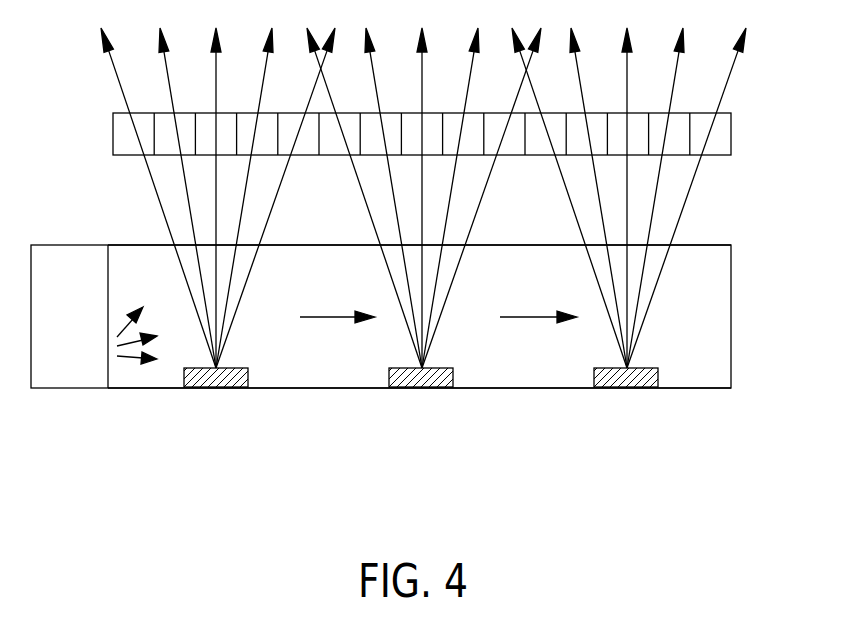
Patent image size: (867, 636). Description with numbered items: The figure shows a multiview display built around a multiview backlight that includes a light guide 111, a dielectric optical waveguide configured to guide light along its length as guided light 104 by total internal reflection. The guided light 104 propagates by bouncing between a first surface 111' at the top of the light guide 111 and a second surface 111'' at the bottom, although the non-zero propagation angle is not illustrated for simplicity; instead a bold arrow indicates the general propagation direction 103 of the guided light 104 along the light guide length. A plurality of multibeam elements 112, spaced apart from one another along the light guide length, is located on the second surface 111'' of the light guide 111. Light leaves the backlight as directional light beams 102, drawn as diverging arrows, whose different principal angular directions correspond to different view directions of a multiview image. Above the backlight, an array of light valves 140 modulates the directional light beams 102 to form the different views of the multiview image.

The array of light valves 140 is at (733, 131).
The directional light beams 102 is at (702, 162).
The light guide 111 is at (415, 316).
The first surface 111' is at (449, 219).
The second surface 111'' is at (429, 427).
The multibeam elements 112 is at (213, 387).
The propagation direction 103 is at (530, 319).
The guided light 104 is at (139, 365).